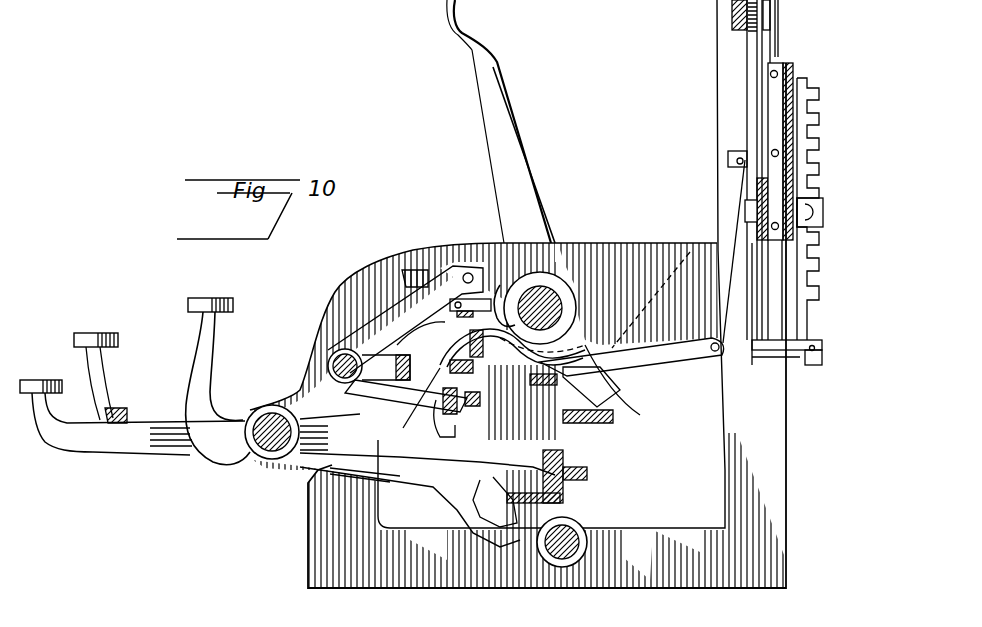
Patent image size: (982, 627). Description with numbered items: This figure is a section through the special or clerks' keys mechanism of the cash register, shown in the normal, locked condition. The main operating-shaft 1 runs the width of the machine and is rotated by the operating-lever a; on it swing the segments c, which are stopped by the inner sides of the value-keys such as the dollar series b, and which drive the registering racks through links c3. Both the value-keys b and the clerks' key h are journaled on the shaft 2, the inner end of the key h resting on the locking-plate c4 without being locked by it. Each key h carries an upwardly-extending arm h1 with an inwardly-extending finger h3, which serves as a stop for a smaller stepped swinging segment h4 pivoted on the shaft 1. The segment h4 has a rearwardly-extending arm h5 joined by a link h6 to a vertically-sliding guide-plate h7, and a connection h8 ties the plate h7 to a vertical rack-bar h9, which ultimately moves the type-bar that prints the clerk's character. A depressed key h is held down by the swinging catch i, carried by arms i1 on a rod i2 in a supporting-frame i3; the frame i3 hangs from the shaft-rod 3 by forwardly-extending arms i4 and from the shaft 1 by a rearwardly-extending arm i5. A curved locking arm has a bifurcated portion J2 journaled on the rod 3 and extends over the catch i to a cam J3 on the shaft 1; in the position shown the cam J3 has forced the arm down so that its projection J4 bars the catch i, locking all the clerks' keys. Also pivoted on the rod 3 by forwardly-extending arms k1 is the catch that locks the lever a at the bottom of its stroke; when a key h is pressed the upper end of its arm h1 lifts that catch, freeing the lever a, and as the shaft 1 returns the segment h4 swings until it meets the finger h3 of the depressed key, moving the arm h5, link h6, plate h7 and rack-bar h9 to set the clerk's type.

The operating-lever a is at (506, 129).
The main operating-shaft 1 is at (548, 305).
The shaft 2 is at (265, 455).
The shaft-rod 3 is at (333, 363).
The dollar series of cash-keys b is at (113, 437).
The special or clerks' key h is at (218, 381).
The upwardly-extending arm h1 is at (472, 410).
The inwardly-extending finger h3 is at (473, 371).
The swinging segment h4 is at (591, 395).
The rearwardly-extending arm h5 is at (680, 350).
The link h6 is at (746, 218).
The vertically-sliding guide-plate h7 is at (747, 96).
The connection h8 is at (780, 348).
The vertical rack-bar h9 is at (812, 357).
The swinging catch i is at (444, 399).
The arms i1 is at (456, 317).
The rod i2 is at (466, 273).
The supporting-frame i3 is at (413, 268).
The forwardly-extending arms i4 is at (501, 312).
The rearwardly-extending arm i5 is at (408, 293).
The forwardly-extending arms k1 is at (421, 333).
The bifurcated portion J2 is at (385, 367).
The cam J3 is at (541, 335).
The projection J4 is at (413, 406).
The swinging segments c is at (622, 400).
The links c3 is at (444, 419).
The locking-plate c4 is at (567, 500).